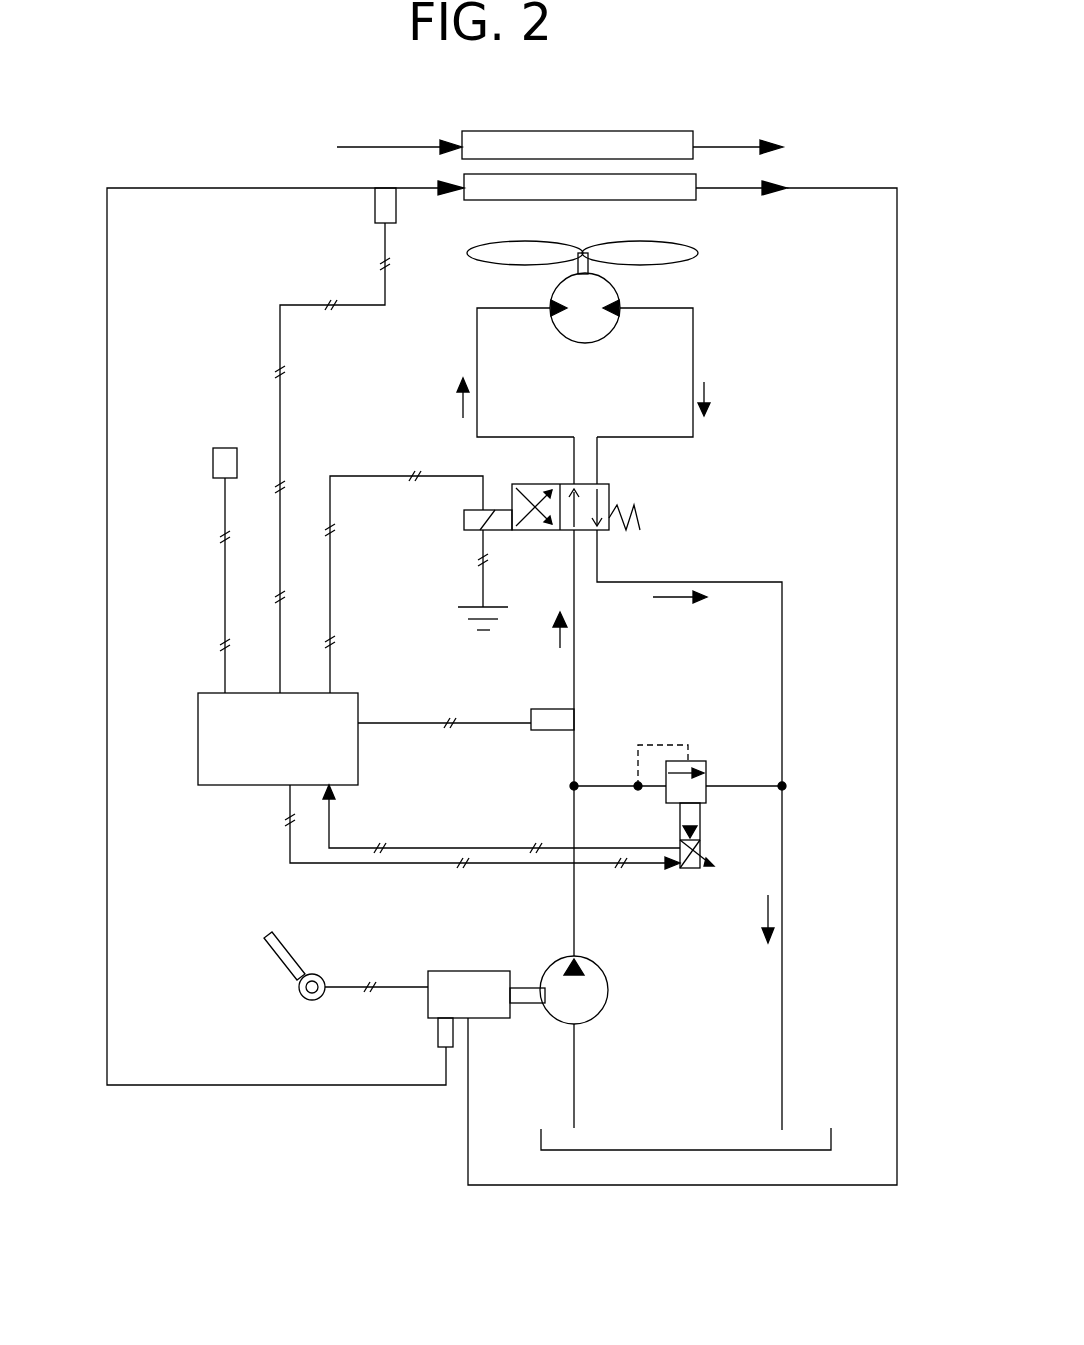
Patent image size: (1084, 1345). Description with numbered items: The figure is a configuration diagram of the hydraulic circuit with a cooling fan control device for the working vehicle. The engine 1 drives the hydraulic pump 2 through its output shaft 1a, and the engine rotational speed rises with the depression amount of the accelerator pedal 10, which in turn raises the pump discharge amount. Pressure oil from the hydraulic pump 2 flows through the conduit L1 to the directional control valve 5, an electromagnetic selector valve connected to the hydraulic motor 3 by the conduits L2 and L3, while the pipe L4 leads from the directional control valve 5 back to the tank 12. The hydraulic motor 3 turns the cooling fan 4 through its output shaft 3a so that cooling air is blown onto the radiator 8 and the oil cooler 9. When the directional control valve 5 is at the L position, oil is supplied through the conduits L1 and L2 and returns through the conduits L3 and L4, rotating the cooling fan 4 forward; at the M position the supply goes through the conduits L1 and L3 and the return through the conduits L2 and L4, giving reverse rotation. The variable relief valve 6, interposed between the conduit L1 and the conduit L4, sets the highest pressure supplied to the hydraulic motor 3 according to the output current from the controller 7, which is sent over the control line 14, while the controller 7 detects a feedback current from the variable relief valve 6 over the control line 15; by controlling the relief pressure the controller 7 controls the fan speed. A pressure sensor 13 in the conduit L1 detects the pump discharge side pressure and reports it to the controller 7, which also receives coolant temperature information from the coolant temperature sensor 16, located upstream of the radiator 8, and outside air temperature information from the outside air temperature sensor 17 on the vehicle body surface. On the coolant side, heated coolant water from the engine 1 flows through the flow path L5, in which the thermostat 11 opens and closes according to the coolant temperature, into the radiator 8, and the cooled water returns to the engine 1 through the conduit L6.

The engine 1 is at (460, 968).
The output shaft 1a is at (527, 1004).
The hydraulic pump 2 is at (612, 1007).
The hydraulic motor 3 is at (555, 331).
The output shaft 3a is at (593, 272).
The cooling fan 4 is at (683, 243).
The directional control valve 5 is at (615, 498).
The variable relief valve 6 is at (710, 767).
The controller 7 is at (197, 732).
The radiator 8 is at (469, 201).
The oil cooler 9 is at (512, 131).
The accelerator pedal 10 is at (288, 975).
The thermostat 11 is at (437, 1032).
The tank 12 is at (541, 1145).
The pressure sensor 13 is at (553, 731).
The control line 14 is at (433, 865).
The control line 15 is at (412, 848).
The coolant temperature sensor 16 is at (375, 206).
The outside air temperature sensor 17 is at (225, 448).
The conduit L1 is at (574, 912).
The conduit L2 is at (477, 340).
The conduit L3 is at (693, 360).
The pipe L4 is at (782, 665).
The flow path L5 is at (107, 640).
The conduit L6 is at (897, 733).